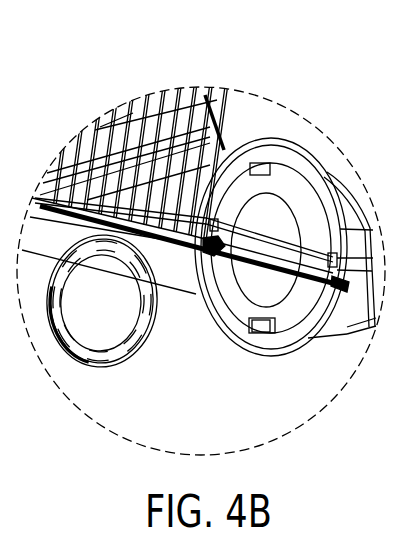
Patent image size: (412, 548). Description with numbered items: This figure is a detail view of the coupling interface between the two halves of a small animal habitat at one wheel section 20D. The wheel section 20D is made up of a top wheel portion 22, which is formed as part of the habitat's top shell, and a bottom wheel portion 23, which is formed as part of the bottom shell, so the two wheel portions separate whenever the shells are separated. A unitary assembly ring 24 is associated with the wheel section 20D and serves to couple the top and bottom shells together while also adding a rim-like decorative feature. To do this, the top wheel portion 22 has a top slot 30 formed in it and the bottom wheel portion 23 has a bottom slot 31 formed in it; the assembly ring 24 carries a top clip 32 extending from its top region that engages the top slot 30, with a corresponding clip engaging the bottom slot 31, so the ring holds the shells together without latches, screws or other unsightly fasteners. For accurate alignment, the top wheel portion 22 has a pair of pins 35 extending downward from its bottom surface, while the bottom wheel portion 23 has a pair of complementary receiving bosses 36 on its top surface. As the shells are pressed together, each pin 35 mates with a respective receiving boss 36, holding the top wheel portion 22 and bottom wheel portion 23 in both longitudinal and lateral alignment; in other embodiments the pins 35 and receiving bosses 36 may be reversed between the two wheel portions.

The wheel section 20D is at (333, 376).
The top wheel portion 22 is at (200, 118).
The bottom wheel portion 23 is at (232, 326).
The assembly ring 24 is at (142, 344).
The top slot 30 is at (264, 162).
The bottom slot 31 is at (259, 334).
The top clip 32 is at (135, 266).
The pins 35 is at (216, 243).
The receiving bosses 36 is at (219, 241).